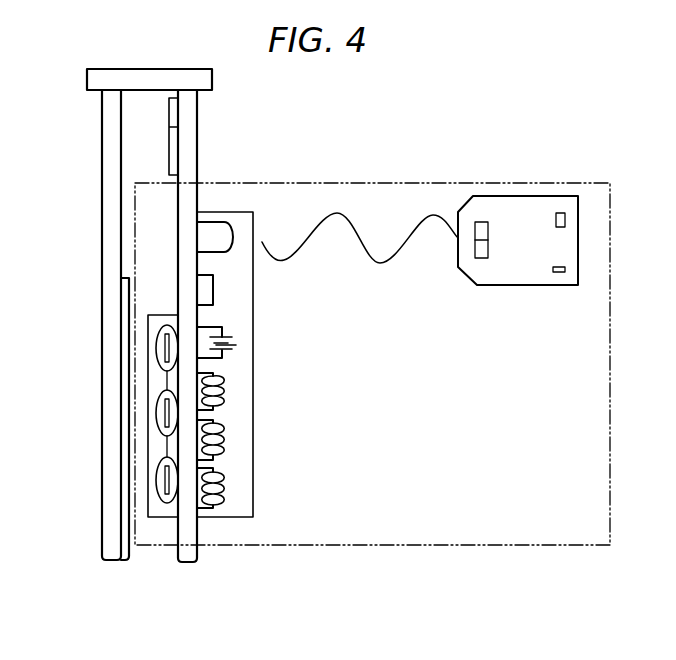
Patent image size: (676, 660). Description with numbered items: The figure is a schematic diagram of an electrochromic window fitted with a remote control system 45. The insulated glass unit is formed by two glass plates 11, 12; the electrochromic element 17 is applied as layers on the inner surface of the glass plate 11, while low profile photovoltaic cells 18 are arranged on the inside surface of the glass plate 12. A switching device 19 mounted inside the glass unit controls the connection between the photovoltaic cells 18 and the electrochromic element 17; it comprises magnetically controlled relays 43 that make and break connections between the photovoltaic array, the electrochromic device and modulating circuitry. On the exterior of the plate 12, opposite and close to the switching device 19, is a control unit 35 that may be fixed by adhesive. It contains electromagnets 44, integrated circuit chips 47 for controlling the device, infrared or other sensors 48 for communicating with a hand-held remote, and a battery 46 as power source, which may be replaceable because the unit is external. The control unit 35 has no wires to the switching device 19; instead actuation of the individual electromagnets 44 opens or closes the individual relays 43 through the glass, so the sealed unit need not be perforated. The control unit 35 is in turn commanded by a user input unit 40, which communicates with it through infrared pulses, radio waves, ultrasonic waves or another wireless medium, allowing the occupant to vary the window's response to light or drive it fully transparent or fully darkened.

The glass plate 11 is at (113, 176).
The glass plate 12 is at (188, 115).
The electrochromic element 17 is at (125, 300).
The photovoltaic cells 18 is at (180, 153).
The switching device 19 is at (165, 314).
The control unit 35 is at (243, 415).
The user input unit 40 is at (528, 210).
The magnetically controlled relays 43 is at (167, 503).
The electromagnets 44 is at (225, 490).
The remote control system 45 is at (403, 182).
The battery 46 is at (237, 345).
The integrated circuit chips 47 is at (206, 290).
The sensors 48 is at (222, 238).